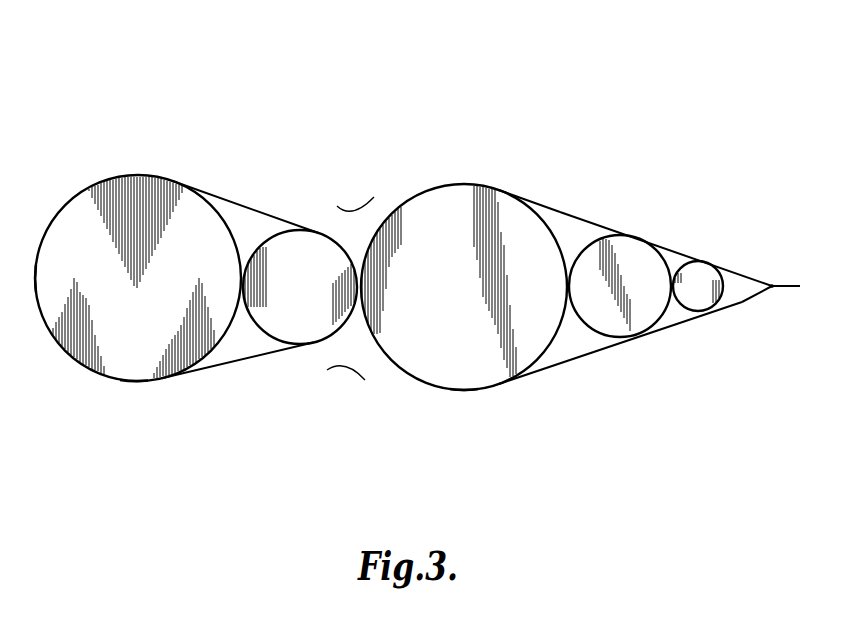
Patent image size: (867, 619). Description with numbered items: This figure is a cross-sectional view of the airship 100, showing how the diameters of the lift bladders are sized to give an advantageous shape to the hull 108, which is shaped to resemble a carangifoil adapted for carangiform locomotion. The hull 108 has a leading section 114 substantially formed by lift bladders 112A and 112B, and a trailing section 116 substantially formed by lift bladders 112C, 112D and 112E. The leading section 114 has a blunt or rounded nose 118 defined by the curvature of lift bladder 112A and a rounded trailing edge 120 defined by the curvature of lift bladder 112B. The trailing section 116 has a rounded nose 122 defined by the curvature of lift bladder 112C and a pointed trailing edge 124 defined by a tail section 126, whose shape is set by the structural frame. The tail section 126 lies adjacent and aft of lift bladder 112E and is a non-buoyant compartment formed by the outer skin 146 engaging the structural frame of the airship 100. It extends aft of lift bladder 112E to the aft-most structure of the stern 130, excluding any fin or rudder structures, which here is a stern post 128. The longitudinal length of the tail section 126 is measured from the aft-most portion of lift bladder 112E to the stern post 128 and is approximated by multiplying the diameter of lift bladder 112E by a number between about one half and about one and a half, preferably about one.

The airship 100 is at (662, 100).
The hull 108 is at (668, 331).
The lift bladder 112A is at (135, 176).
The lift bladder 112B is at (315, 228).
The lift bladder 112C is at (423, 183).
The lift bladder 112D is at (642, 247).
The lift bladder 112E is at (707, 266).
The leading section 114 is at (128, 390).
The trailing section 116 is at (465, 396).
The rounded nose 118 is at (36, 288).
The rounded trailing edge 120 is at (338, 331).
The rounded nose 122 is at (370, 222).
The pointed trailing edge 124 is at (770, 288).
The tail section 126 is at (742, 302).
The stern post 128 is at (773, 285).
The stern 130 is at (750, 268).
The outer skin 146 is at (560, 211).